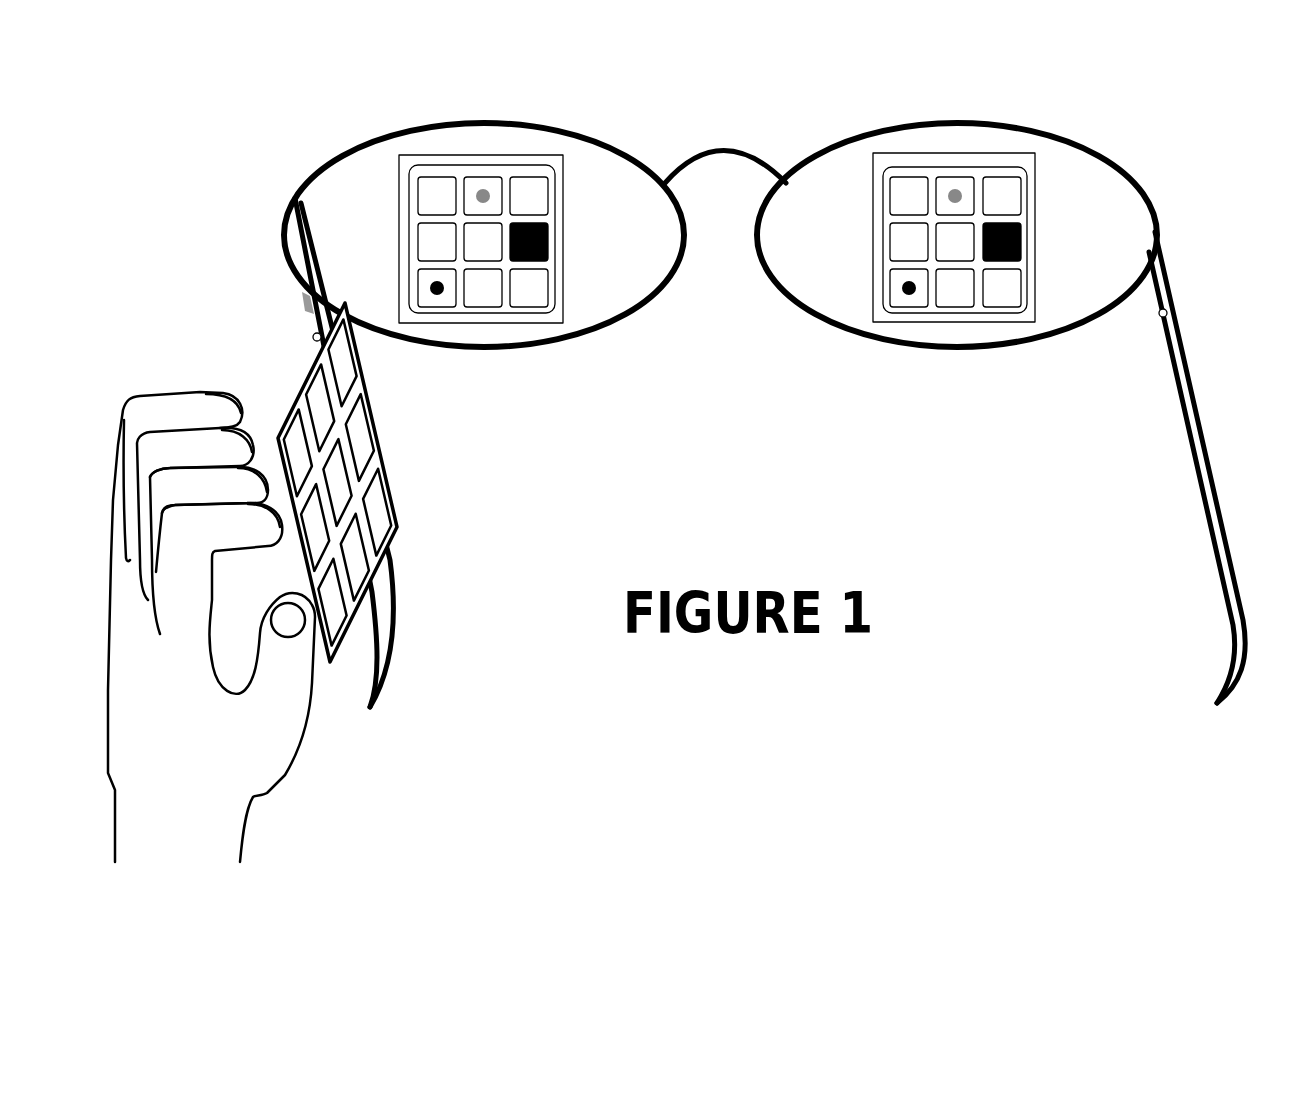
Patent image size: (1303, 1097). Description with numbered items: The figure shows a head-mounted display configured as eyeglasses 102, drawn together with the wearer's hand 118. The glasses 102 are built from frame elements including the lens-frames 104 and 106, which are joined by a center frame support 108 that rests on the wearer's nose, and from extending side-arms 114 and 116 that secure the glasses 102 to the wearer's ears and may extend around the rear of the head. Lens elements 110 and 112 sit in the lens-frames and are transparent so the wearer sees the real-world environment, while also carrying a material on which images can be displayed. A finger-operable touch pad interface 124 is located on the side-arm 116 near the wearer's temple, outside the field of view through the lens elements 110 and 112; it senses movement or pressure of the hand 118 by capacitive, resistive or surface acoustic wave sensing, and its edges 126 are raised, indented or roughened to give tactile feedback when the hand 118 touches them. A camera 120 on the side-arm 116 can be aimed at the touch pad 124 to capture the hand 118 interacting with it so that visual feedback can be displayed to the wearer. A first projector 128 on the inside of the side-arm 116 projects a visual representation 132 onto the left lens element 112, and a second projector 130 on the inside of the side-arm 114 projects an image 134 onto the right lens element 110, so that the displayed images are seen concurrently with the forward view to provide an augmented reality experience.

The eyeglasses 102 is at (418, 82).
The lens-frame 104 is at (1010, 127).
The lens-frame 106 is at (519, 124).
The center frame support 108 is at (716, 152).
The lens element 110 is at (822, 280).
The lens element 112 is at (605, 282).
The extending side-arm 114 is at (1210, 452).
The extending side-arm 116 is at (405, 612).
The wearer's hand 118 is at (123, 400).
The camera 120 is at (300, 328).
The finger-operable touch pad interface 124 is at (383, 423).
The edges 126 is at (387, 449).
The first projector 128 is at (291, 286).
The second projector 130 is at (1172, 300).
The visual representation 132 is at (397, 262).
The image 134 is at (1037, 262).